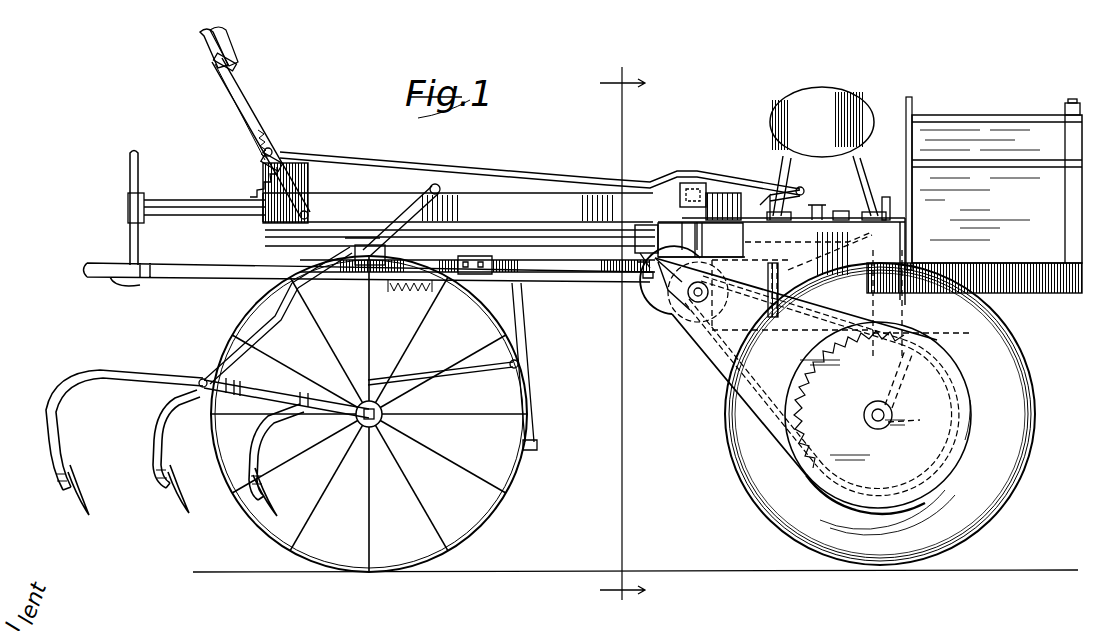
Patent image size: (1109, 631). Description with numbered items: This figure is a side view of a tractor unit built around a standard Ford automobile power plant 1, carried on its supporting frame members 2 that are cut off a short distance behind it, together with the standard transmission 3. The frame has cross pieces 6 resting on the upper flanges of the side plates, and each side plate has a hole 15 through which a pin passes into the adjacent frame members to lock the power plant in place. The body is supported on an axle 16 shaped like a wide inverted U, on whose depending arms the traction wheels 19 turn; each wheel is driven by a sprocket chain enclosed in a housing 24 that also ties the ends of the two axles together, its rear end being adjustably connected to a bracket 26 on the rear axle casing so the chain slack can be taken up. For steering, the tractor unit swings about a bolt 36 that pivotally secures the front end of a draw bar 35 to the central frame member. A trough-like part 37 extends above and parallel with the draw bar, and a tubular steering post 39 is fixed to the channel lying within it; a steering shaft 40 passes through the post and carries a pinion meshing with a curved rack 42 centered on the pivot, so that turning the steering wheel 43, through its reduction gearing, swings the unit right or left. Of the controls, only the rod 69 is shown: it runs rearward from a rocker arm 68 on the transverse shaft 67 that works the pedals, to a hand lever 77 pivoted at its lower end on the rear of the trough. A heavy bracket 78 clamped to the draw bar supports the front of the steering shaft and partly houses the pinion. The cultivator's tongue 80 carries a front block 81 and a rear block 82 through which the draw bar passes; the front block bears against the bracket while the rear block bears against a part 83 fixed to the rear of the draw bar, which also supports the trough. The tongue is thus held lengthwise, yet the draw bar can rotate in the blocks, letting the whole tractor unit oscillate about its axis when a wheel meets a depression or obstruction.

The standard Ford automobile power plant 1 is at (994, 183).
The supporting frame members 2 is at (1060, 295).
The standard transmission 3 is at (622, 335).
The cross pieces 6 is at (885, 197).
The hole 15 is at (906, 247).
The axle 16 is at (905, 393).
The traction wheels 19 is at (1018, 391).
The housing 24 is at (722, 364).
The bracket 26 is at (664, 282).
The draw bar 35 is at (528, 228).
The bolt 36 is at (840, 211).
The trough-like part 37 is at (492, 196).
The tubular steering post 39 is at (200, 215).
The steering shaft 40 is at (663, 198).
The curved rack 42 is at (733, 195).
The steering wheel 43 is at (131, 154).
The transverse shaft 67 is at (818, 206).
The rocker arm 68 is at (800, 188).
The rod 69 is at (470, 165).
The hand lever 77 is at (238, 111).
The bracket 78 is at (689, 183).
The tongue 80 is at (592, 274).
The block 81 is at (640, 226).
The block 82 is at (384, 230).
The part 83 is at (345, 236).